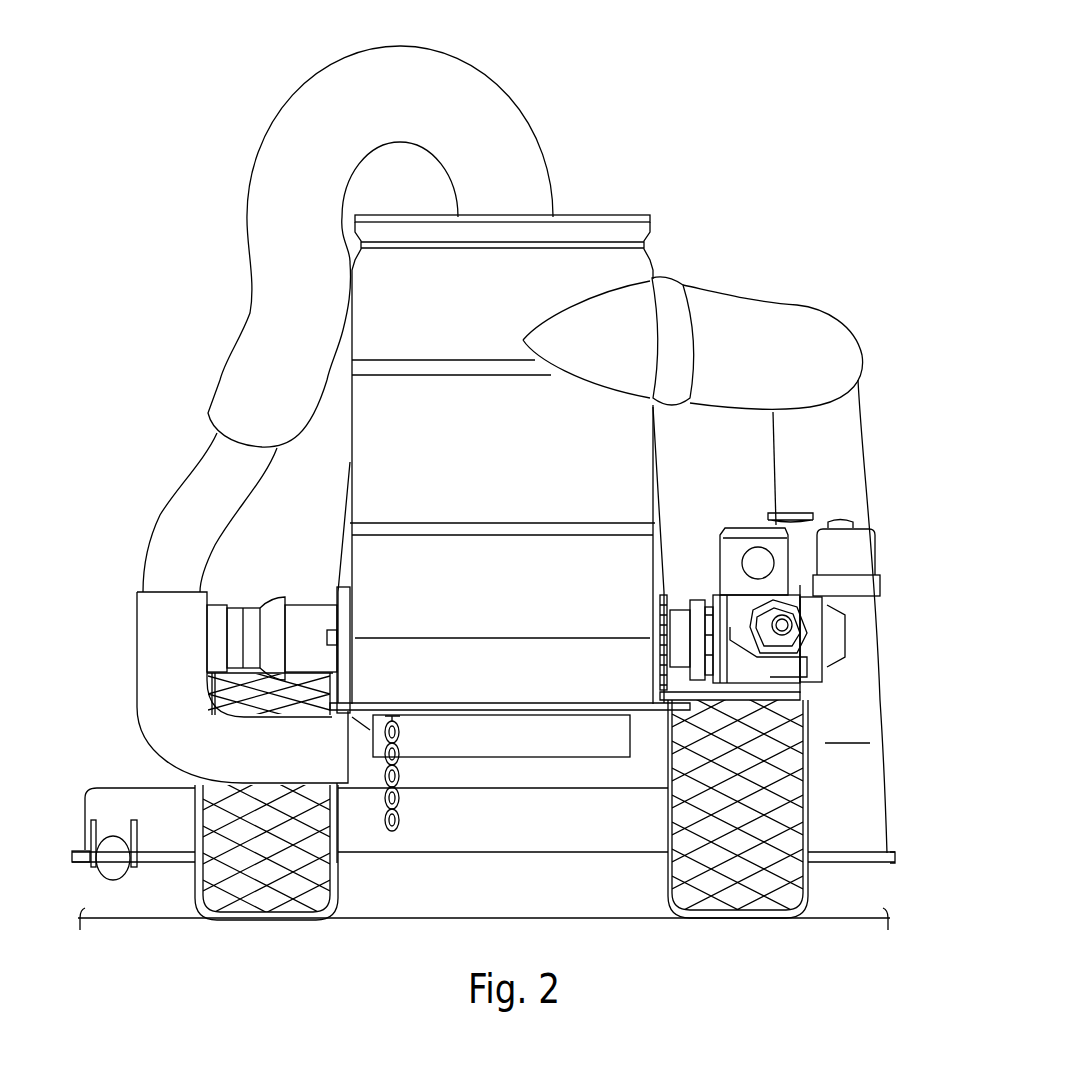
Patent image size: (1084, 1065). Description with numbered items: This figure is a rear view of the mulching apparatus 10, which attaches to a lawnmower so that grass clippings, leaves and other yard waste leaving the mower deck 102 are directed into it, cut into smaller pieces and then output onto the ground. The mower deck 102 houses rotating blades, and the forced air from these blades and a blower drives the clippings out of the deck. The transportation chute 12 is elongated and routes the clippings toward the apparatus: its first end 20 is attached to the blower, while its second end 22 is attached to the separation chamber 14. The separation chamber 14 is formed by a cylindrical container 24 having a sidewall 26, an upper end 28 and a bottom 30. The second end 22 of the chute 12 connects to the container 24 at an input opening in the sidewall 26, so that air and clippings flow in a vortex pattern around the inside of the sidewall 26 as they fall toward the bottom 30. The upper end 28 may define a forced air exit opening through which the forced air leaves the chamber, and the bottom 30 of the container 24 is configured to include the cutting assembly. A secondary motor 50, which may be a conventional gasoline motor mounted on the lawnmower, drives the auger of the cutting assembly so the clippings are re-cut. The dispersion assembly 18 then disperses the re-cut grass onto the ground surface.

The mulching apparatus 10 is at (571, 89).
The transportation chute 12 is at (770, 345).
The separation chamber 14 is at (560, 283).
The dispersion assembly 18 is at (397, 370).
The first end 20 is at (878, 797).
The second end 22 is at (717, 310).
The cylindrical container 24 is at (423, 412).
The sidewall 26 is at (405, 463).
The upper end 28 is at (427, 213).
The bottom 30 is at (607, 713).
The secondary motor 50 is at (772, 578).
The mower deck 102 is at (157, 812).